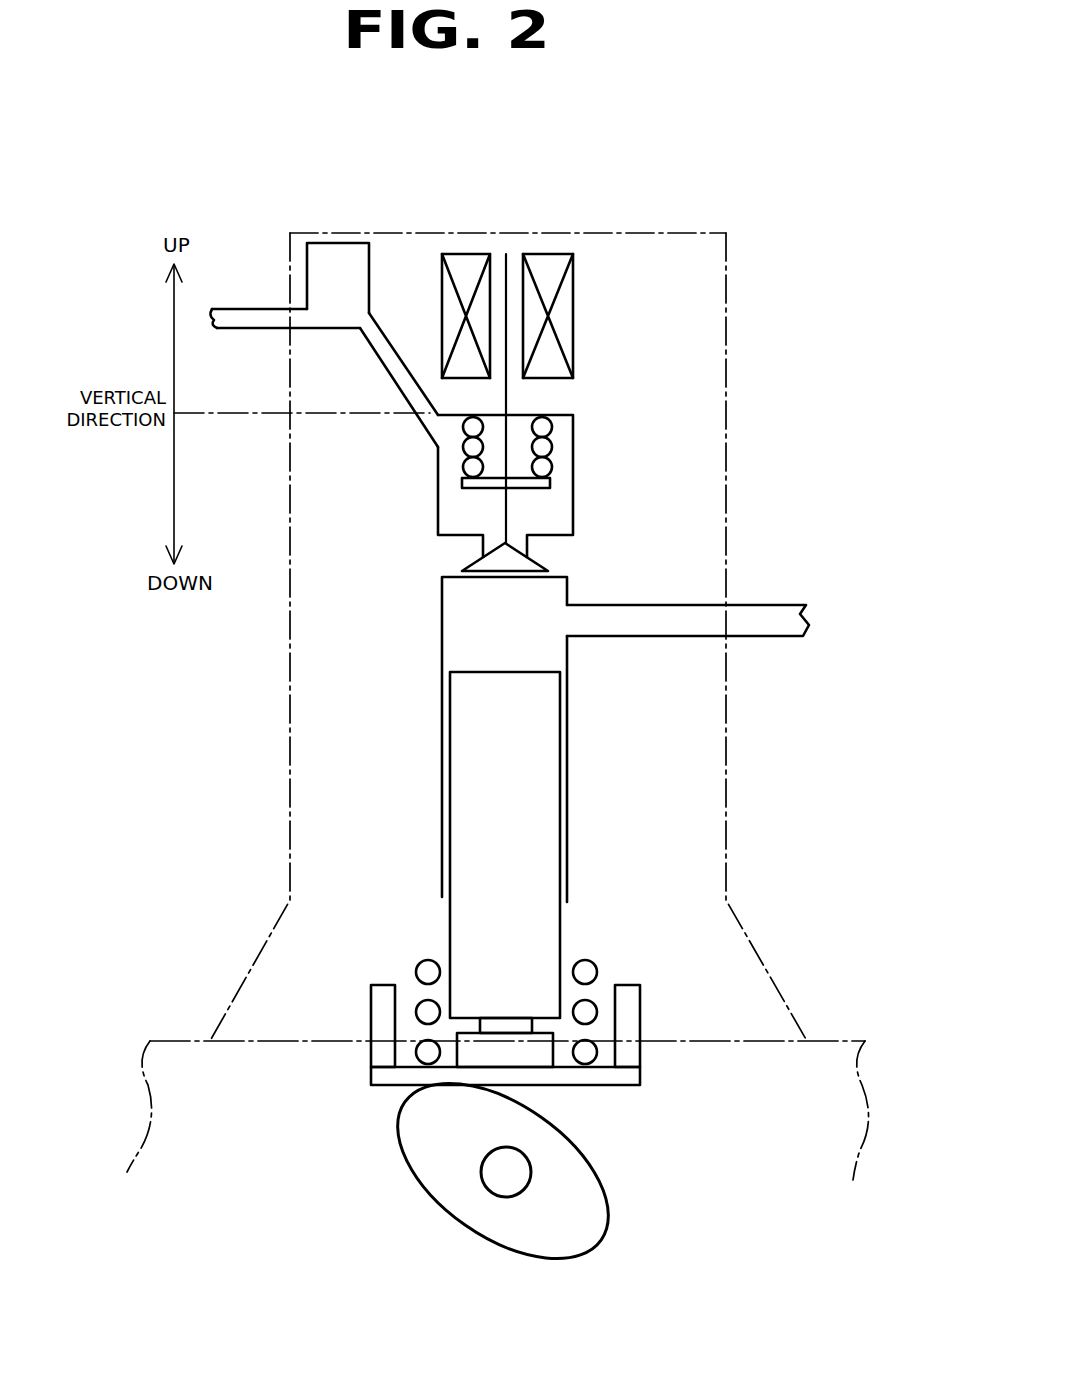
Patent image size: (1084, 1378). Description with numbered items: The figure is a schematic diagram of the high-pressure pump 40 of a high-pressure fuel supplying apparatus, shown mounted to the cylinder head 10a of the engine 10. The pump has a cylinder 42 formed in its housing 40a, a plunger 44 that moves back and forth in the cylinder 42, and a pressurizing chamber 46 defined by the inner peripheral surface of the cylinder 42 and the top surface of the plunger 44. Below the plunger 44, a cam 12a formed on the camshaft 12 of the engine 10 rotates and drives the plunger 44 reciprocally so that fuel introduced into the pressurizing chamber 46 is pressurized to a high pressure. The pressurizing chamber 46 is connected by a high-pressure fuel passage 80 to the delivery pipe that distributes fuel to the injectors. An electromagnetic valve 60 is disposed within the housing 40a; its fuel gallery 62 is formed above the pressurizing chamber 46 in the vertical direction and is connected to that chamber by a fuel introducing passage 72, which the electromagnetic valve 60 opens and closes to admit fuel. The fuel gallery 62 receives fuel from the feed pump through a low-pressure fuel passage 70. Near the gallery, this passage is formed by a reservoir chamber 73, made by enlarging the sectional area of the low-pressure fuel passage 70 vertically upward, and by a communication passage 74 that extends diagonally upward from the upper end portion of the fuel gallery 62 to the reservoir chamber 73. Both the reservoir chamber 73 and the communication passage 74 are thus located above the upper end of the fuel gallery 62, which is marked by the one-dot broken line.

The engine 10 is at (507, 1044).
The cylinder head 10a is at (818, 1046).
The camshaft 12 is at (498, 1175).
The cam 12a is at (586, 1206).
The high-pressure pump 40 is at (517, 613).
The housing 40a is at (727, 340).
The cylinder 42 is at (568, 810).
The plunger 44 is at (463, 800).
The pressurizing chamber 46 is at (448, 620).
The electromagnetic valve 60 is at (678, 302).
The fuel gallery 62 is at (560, 508).
The low-pressure fuel passage 70 is at (324, 312).
The fuel introducing passage 72 is at (483, 556).
The reservoir chamber 73 is at (327, 265).
The communication passage 74 is at (380, 345).
The high-pressure fuel passage 80 is at (750, 606).